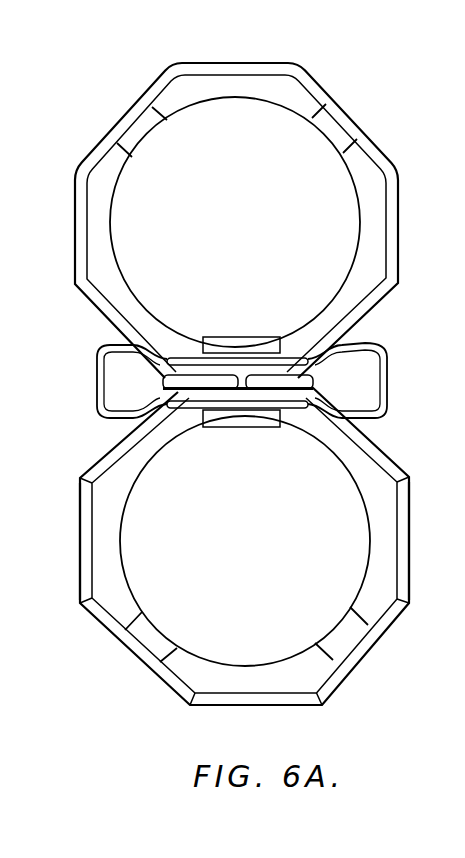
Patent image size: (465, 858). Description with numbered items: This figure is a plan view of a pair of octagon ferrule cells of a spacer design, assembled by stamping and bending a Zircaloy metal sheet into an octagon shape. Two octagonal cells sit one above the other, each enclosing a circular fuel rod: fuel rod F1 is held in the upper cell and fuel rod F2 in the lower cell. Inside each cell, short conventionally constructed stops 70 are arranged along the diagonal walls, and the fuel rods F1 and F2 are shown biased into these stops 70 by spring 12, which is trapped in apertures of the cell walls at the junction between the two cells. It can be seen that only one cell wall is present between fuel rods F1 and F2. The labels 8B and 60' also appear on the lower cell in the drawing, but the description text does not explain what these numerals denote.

The frame 8B is at (219, 708).
The frame rim 60' is at (235, 606).
The stops 70 is at (147, 130).
The spring 12 is at (383, 348).
The fuel rod F1 is at (200, 204).
The fuel rod F2 is at (212, 510).